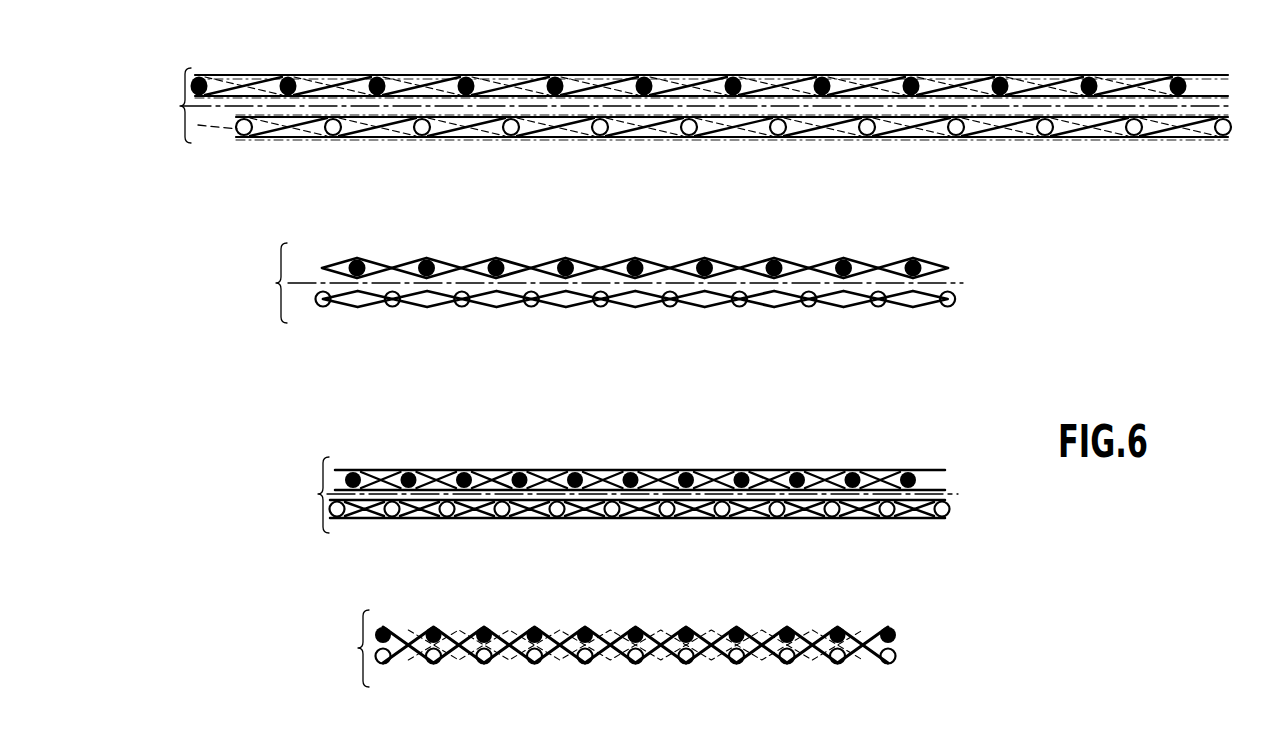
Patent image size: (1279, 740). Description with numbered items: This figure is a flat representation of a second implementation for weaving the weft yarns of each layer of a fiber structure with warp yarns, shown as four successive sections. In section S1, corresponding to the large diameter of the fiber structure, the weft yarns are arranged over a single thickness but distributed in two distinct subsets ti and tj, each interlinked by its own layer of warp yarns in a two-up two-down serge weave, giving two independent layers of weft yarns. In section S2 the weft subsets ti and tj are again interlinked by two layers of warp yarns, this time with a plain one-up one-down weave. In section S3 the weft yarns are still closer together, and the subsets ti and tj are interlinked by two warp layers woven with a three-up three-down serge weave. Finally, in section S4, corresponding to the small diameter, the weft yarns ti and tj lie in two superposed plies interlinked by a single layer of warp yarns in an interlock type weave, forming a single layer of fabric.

The weft yarn subset ti is at (372, 75).
The weft yarn subset tj is at (325, 137).
The section S1 is at (678, 105).
The section S2 is at (595, 283).
The section S3 is at (614, 495).
The section S4 is at (607, 648).